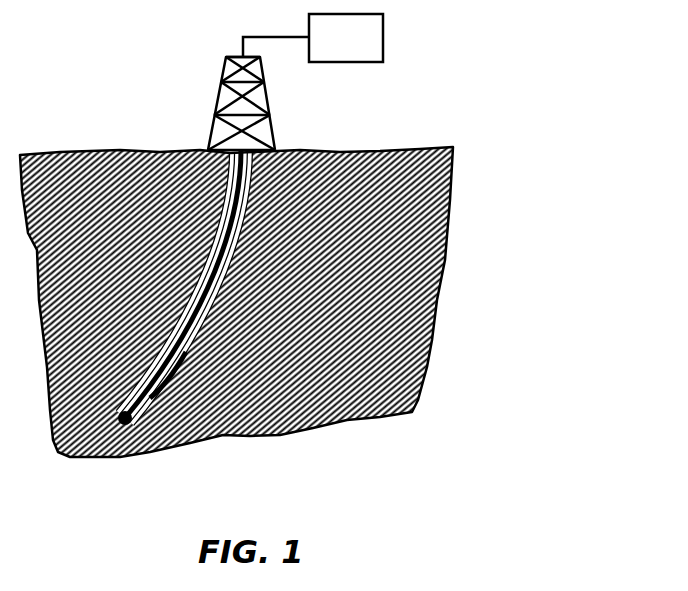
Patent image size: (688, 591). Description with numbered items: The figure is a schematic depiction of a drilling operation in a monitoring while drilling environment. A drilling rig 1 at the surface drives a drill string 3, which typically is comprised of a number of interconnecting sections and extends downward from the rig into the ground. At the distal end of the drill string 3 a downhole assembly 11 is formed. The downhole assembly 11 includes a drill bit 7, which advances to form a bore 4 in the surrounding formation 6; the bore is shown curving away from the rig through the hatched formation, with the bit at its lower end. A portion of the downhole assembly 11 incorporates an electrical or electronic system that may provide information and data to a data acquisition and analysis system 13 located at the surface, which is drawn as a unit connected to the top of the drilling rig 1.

The drilling rig 1 is at (218, 100).
The drill string 3 is at (240, 227).
The bore 4 is at (253, 182).
The formation 6 is at (383, 291).
The drill bit 7 is at (133, 424).
The downhole assembly 11 is at (187, 365).
The data acquisition and analysis system 13 is at (348, 62).